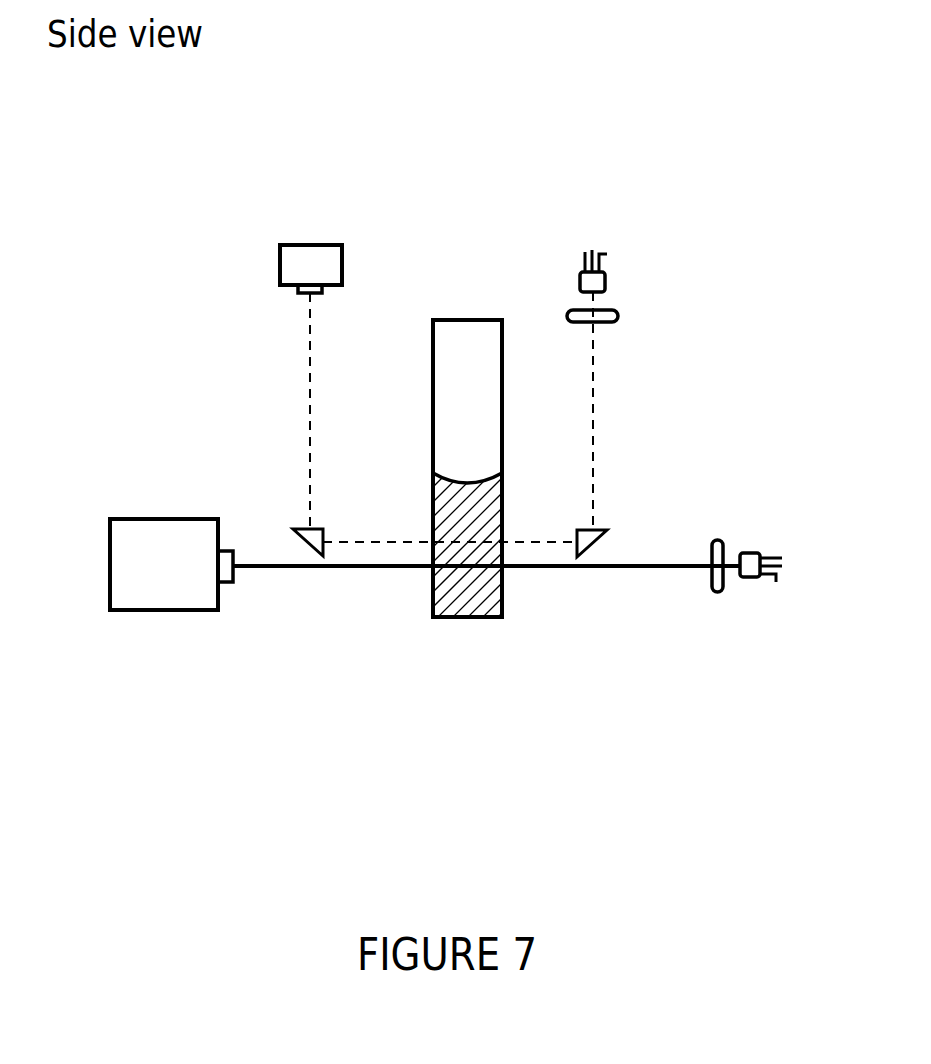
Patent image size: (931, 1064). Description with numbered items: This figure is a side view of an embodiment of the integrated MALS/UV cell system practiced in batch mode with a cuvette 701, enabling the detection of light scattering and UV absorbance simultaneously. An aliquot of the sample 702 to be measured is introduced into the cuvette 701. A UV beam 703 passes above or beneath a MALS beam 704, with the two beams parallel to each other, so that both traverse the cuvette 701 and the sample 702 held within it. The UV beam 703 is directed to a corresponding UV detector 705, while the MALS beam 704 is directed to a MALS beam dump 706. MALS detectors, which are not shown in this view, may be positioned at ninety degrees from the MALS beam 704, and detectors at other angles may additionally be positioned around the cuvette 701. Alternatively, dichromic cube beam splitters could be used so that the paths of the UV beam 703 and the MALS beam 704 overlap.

The cuvette 701 is at (458, 297).
The sample 702 is at (484, 600).
The UV beam 703 is at (308, 407).
The MALS beam 704 is at (358, 576).
The UV detector 705 is at (615, 280).
The MALS beam dump 706 is at (752, 587).